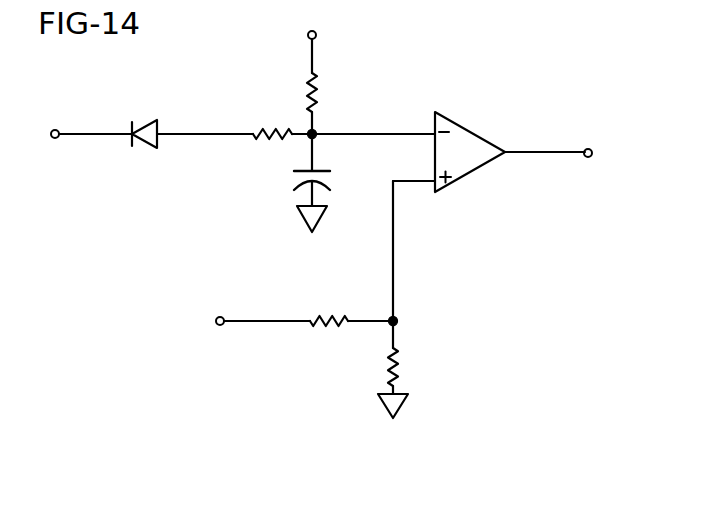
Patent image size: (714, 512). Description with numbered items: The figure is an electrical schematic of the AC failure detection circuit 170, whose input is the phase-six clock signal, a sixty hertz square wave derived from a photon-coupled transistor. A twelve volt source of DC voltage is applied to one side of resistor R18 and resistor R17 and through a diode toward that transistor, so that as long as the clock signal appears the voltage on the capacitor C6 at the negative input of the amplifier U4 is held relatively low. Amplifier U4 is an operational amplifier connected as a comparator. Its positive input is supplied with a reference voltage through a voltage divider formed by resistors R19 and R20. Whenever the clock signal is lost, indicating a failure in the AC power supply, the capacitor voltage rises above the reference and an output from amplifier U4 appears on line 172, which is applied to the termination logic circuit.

The AC failure detection circuit 170 is at (216, 61).
The output line 172 is at (539, 155).
The resistor R17 is at (272, 123).
The resistor R18 is at (332, 92).
The resistor R19 is at (327, 307).
The resistor R20 is at (416, 367).
The capacitor C6 is at (328, 179).
The amplifier U4 is at (470, 152).